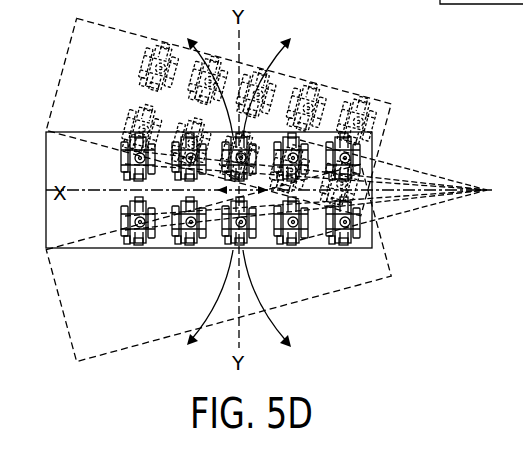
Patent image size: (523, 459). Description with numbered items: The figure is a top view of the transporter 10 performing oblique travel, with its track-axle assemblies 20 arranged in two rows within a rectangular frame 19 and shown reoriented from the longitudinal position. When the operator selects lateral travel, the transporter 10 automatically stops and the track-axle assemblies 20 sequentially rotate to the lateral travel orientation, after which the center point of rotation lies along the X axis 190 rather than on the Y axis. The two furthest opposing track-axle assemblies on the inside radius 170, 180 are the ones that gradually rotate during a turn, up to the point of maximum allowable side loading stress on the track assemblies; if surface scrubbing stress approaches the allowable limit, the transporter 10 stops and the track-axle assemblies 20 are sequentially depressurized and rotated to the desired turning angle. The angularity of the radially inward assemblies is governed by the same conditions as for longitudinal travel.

The transporter 10 is at (96, 109).
The tray / carrier frame 19 is at (66, 219).
The track-axle assemblies 20 is at (193, 237).
The track-axle assembly on the inside radius 170 is at (364, 153).
The track-axle assembly on the inside radius 180 is at (376, 238).
The X axis 190 is at (501, 216).